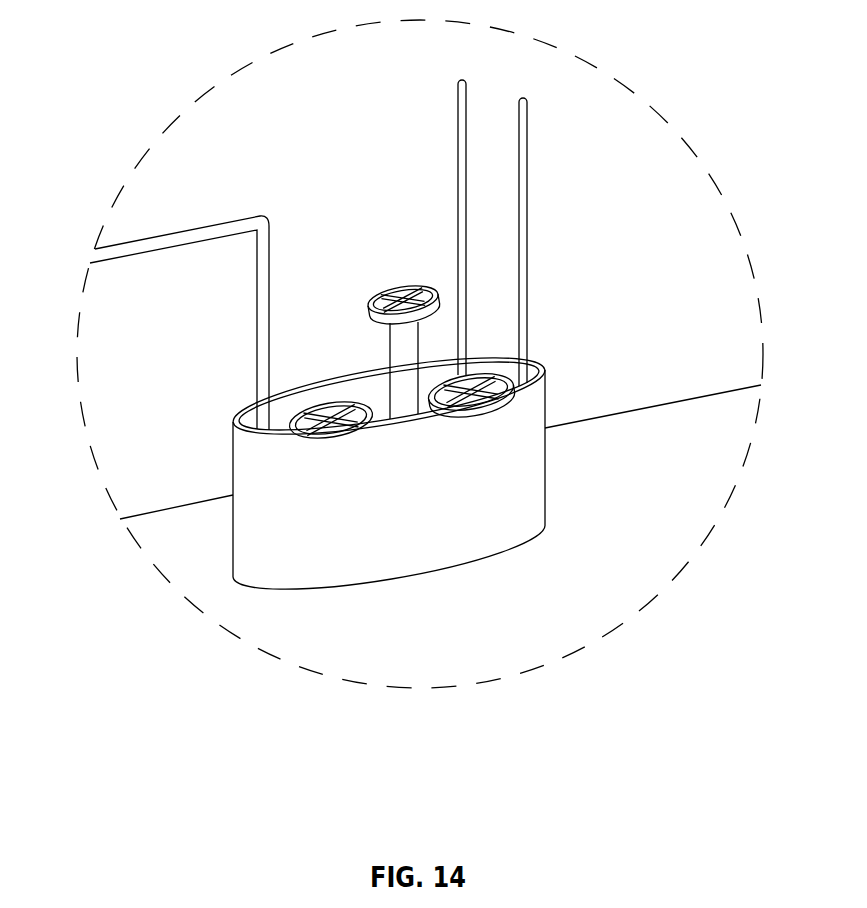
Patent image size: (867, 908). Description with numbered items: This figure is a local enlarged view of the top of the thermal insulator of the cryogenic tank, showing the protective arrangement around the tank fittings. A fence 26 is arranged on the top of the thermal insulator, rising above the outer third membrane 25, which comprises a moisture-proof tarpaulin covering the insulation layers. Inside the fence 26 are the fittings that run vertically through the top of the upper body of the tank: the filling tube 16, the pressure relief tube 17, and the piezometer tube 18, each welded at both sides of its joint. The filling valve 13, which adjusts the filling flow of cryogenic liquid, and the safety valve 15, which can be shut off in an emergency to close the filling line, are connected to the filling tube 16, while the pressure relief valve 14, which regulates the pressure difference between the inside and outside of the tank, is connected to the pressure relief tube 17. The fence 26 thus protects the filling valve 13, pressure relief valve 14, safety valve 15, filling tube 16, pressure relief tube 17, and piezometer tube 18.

The filling valve 13 is at (513, 372).
The pressure relief valve 14 is at (290, 415).
The safety valve 15 is at (392, 290).
The filling tube 16 is at (524, 193).
The pressure relief tube 17 is at (461, 175).
The piezometer tube 18 is at (262, 218).
The third membrane 25 is at (647, 452).
The fence 26 is at (278, 477).